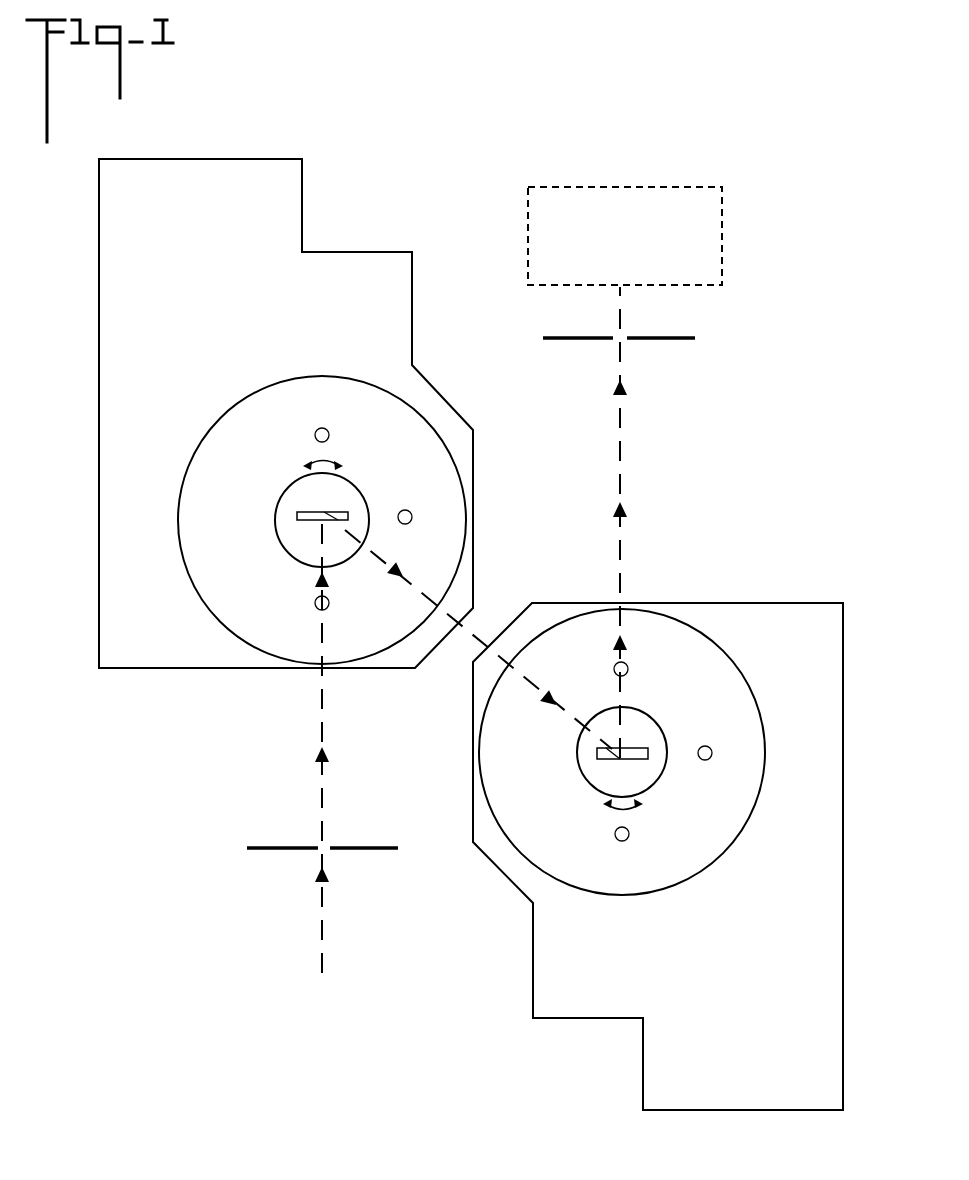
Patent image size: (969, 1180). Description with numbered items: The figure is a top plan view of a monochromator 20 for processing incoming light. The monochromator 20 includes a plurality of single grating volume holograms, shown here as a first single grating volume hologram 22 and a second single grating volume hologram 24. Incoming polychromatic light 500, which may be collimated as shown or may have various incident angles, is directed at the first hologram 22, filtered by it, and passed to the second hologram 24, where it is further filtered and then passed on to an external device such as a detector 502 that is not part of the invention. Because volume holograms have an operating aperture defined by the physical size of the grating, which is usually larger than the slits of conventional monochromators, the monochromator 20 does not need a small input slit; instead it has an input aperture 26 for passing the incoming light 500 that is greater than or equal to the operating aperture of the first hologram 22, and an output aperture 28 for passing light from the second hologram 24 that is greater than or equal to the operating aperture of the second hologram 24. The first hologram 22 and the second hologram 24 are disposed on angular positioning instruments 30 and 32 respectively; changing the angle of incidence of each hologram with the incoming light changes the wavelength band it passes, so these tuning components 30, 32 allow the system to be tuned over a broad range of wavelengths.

The monochromator 20 is at (447, 162).
The first single grating volume hologram 22 is at (347, 512).
The second single grating volume hologram 24 is at (597, 758).
The input aperture 26 is at (322, 845).
The output aperture 28 is at (620, 343).
The angular positioning instrument 30 is at (277, 603).
The angular positioning instrument 32 is at (685, 672).
The incoming polychromatic light 500 is at (323, 943).
The detector 502 is at (722, 245).